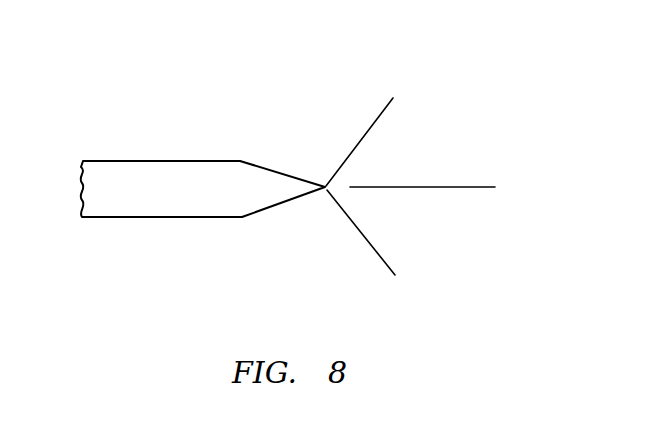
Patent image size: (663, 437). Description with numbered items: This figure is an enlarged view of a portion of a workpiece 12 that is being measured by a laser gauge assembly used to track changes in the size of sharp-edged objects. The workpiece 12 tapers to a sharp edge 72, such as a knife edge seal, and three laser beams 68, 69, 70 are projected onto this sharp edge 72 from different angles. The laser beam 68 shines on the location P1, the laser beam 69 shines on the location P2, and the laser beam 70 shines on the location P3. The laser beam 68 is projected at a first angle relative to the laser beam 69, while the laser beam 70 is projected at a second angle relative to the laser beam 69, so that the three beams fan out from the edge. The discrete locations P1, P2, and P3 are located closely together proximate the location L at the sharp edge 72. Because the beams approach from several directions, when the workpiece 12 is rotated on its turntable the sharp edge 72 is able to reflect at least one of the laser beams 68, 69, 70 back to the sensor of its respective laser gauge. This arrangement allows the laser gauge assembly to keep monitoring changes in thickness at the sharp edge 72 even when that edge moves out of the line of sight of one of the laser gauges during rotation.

The workpiece 12 is at (137, 175).
The sharp edge 72 is at (304, 176).
The laser beam 68 is at (380, 112).
The laser beam 69 is at (473, 184).
The laser beam 70 is at (378, 253).
The location P1 is at (322, 185).
The location P2 is at (328, 186).
The location P3 is at (316, 194).
The location L is at (323, 205).